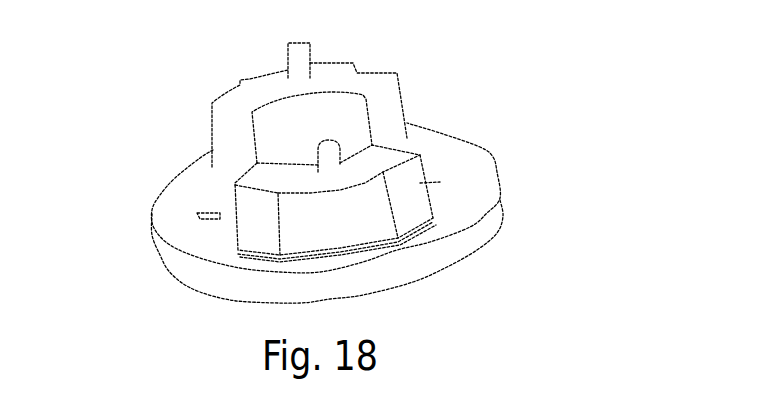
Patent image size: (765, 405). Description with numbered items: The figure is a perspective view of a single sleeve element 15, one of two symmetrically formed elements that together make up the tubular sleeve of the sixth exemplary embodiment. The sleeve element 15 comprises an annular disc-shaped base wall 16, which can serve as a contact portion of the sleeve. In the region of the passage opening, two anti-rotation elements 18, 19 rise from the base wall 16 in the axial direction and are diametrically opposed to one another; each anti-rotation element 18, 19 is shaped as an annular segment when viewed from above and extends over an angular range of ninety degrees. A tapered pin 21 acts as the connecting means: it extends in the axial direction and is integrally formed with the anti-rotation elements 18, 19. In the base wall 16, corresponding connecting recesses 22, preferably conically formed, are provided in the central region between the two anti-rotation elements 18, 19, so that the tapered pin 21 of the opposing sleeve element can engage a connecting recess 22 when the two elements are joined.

The sleeve element 15 is at (475, 193).
The annular disc-shaped base wall 16 is at (435, 237).
The anti-rotation element 18 is at (382, 97).
The anti-rotation element 19 is at (363, 218).
The tapered pin 21 is at (297, 53).
The connecting recess 22 is at (205, 217).